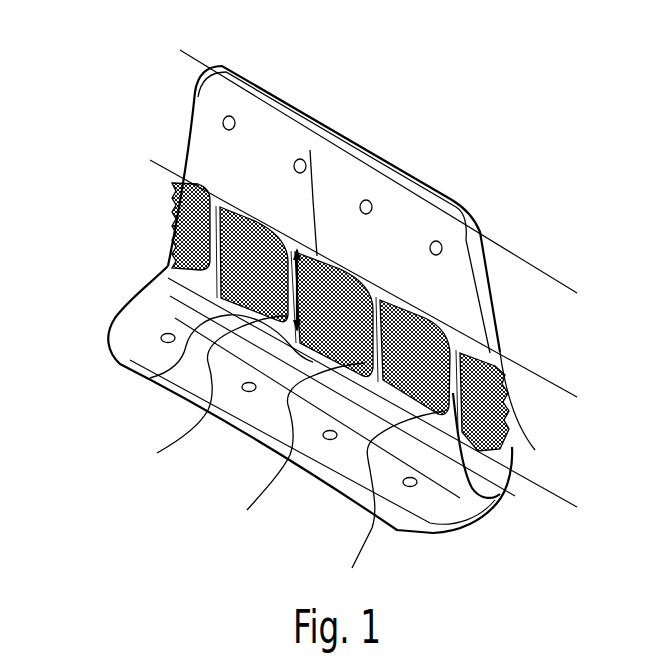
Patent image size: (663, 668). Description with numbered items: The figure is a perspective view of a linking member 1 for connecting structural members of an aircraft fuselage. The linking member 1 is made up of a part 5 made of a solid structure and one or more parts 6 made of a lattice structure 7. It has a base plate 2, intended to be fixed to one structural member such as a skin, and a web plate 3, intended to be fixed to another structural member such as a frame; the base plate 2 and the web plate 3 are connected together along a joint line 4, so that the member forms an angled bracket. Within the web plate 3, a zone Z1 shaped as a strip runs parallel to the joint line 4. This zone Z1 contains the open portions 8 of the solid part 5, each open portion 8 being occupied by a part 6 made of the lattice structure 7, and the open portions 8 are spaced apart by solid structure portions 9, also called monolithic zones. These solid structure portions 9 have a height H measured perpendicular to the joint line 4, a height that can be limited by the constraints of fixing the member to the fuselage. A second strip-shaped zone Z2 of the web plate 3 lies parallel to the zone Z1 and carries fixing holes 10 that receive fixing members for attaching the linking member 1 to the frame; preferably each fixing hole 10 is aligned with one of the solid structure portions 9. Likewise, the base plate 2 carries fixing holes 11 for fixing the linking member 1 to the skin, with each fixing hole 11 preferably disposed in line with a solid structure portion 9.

The linking member 1 is at (517, 211).
The base plate 2 is at (442, 492).
The web plate 3 is at (207, 150).
The joint line 4 is at (165, 265).
The part made of a solid structure 5 is at (453, 287).
The part made of a lattice structure 6 is at (168, 185).
The lattice structure 7 is at (262, 215).
The open portion 8 is at (173, 213).
The solid structure portion 9 is at (172, 240).
The fixing hole 10 is at (228, 115).
The fixing hole 11 is at (167, 336).
The height H is at (241, 388).
The zone Z1 is at (570, 400).
The zone Z2 is at (570, 293).